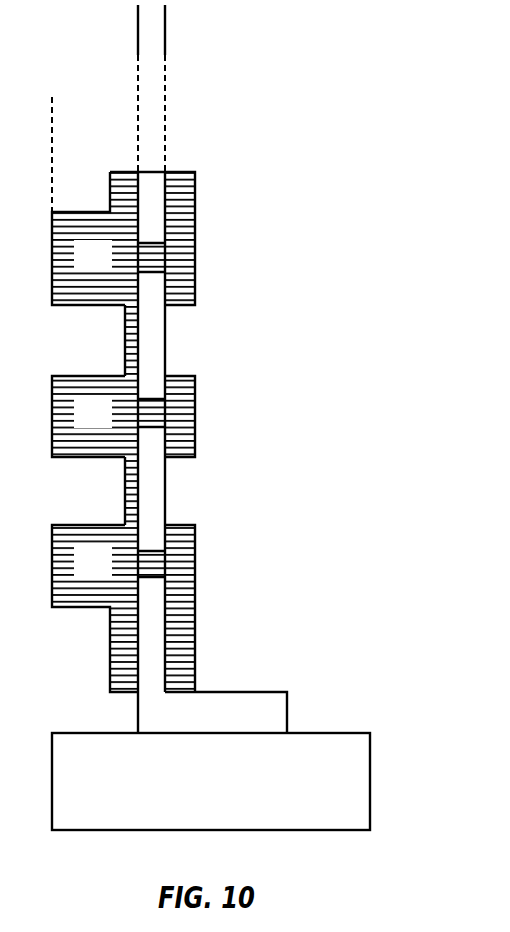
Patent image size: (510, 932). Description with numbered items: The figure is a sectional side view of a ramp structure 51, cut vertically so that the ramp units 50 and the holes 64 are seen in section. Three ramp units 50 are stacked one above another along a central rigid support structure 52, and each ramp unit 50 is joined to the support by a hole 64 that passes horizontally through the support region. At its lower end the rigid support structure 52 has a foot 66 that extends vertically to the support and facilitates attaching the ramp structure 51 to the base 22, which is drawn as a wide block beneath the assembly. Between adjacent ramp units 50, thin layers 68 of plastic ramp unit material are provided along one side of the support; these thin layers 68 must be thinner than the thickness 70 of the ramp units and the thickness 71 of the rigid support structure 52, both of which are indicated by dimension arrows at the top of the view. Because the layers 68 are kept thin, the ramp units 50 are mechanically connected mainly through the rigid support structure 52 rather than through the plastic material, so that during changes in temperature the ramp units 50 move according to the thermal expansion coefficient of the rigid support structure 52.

The base 22 is at (225, 796).
The ramp units 50 is at (108, 271).
The ramp structure 51 is at (288, 111).
The rigid support structure 52 is at (167, 345).
The holes 64 is at (176, 253).
The foot 66 is at (210, 702).
The thin layers 68 is at (125, 356).
The thickness of the ramp units 70 is at (130, 110).
The thickness of the rigid support structure 71 is at (173, 31).